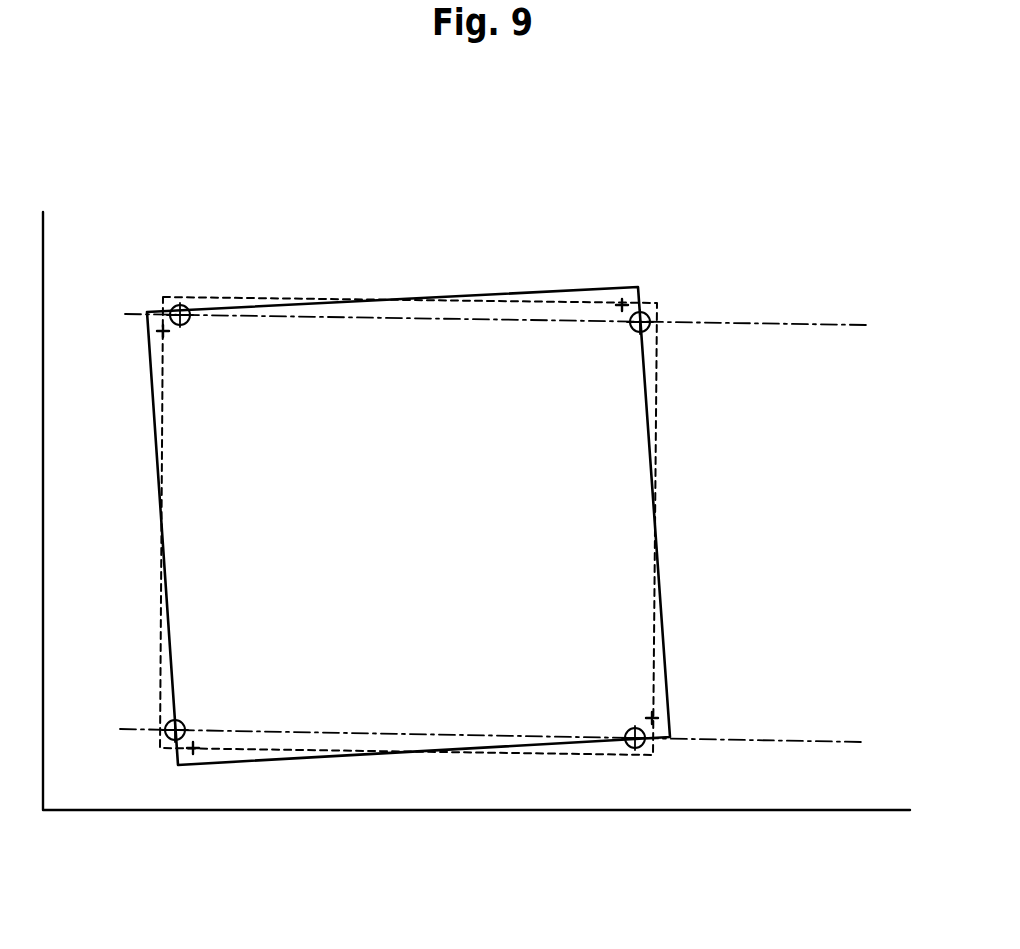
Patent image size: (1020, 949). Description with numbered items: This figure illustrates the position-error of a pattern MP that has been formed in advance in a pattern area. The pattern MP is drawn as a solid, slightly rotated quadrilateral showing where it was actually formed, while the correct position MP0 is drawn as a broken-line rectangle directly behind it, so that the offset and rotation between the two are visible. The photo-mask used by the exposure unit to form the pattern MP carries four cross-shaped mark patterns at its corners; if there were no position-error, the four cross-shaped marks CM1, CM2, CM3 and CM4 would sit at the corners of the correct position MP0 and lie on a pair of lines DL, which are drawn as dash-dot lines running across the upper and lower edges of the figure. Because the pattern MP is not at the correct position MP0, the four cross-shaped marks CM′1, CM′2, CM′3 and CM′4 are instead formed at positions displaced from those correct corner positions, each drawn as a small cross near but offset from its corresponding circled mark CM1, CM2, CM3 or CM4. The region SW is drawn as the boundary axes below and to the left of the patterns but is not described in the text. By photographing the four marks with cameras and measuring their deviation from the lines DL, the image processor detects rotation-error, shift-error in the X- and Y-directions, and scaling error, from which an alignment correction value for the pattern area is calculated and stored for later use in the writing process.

The scan window / reference axes SW is at (389, 833).
The pattern MP is at (538, 290).
The right position MP0 is at (655, 452).
The lines DL is at (818, 323).
The cross-shaped mark CM1 is at (173, 740).
The cross-shaped mark CM2 is at (633, 750).
The cross-shaped mark CM3 is at (646, 331).
The cross-shaped mark CM4 is at (187, 306).
The cross-shaped mark CM′1 is at (196, 752).
The cross-shaped mark CM′2 is at (668, 742).
The cross-shaped mark CM′3 is at (623, 304).
The cross-shaped mark CM′4 is at (159, 327).